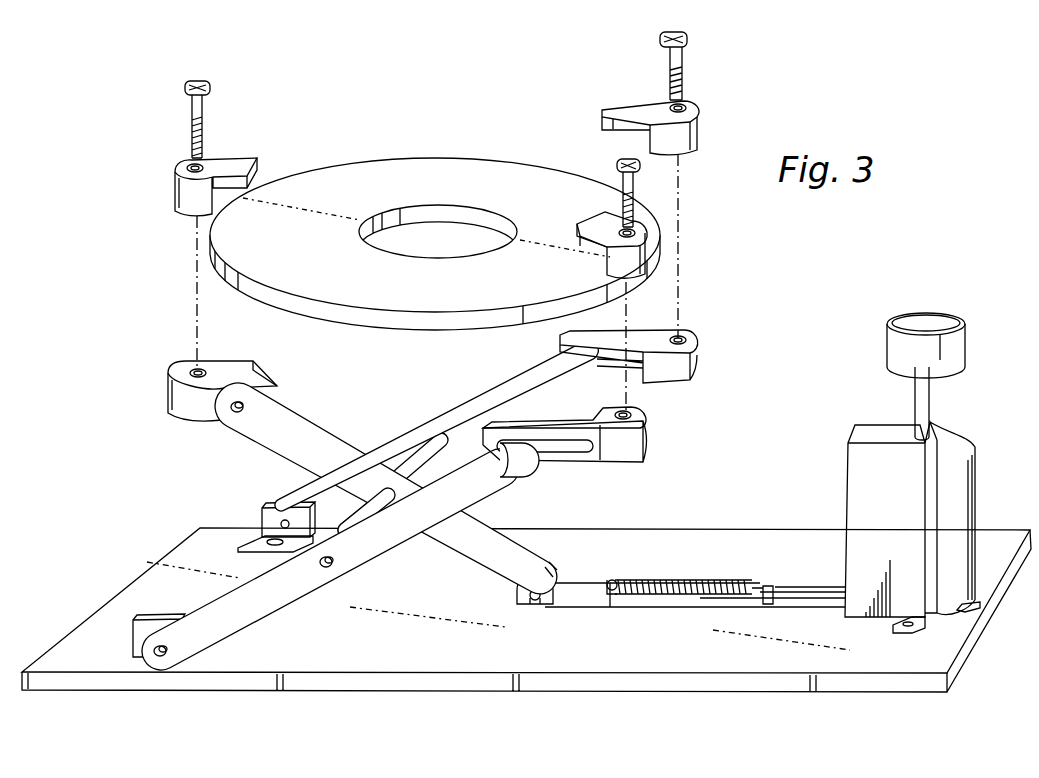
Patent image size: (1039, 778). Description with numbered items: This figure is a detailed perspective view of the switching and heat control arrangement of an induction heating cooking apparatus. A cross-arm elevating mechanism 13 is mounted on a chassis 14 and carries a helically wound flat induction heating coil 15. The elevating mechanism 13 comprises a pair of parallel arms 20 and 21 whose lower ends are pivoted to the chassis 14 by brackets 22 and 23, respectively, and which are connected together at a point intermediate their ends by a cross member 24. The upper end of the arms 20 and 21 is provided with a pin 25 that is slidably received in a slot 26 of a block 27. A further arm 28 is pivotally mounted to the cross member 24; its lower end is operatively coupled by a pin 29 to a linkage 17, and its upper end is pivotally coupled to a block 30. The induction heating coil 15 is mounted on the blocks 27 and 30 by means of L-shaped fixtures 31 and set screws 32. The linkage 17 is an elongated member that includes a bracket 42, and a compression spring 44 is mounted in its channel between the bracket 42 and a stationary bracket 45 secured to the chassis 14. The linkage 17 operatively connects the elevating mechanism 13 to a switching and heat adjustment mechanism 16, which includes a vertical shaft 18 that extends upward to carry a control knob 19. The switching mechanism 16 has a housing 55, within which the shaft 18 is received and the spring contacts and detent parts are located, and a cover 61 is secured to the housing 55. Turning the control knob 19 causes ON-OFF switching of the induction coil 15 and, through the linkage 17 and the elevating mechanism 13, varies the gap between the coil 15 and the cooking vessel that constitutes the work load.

The cross-arm elevating mechanism 13 is at (755, 376).
The chassis 14 is at (688, 530).
The induction heating coil 15 is at (446, 155).
The switching and heat adjustment mechanism 16 is at (1008, 430).
The linkage 17 is at (599, 608).
The vertical shaft 18 is at (930, 397).
The control knob 19 is at (963, 341).
The arm 20 is at (248, 611).
The arm 21 is at (378, 450).
The bracket 22 is at (158, 616).
The bracket 23 is at (260, 512).
The cross member 24 is at (430, 445).
The pin 25 is at (532, 470).
The slot 26 is at (573, 441).
The block 27 is at (699, 336).
The arm 28 is at (466, 551).
The pin 29 is at (536, 606).
The block 30 is at (183, 418).
The L-shaped fixtures 31 is at (175, 204).
The set screws 32 is at (204, 113).
The bracket 42 is at (770, 590).
The compression spring 44 is at (700, 584).
The stationary bracket 45 is at (620, 582).
The housing 55 is at (880, 426).
The cover 61 is at (977, 490).